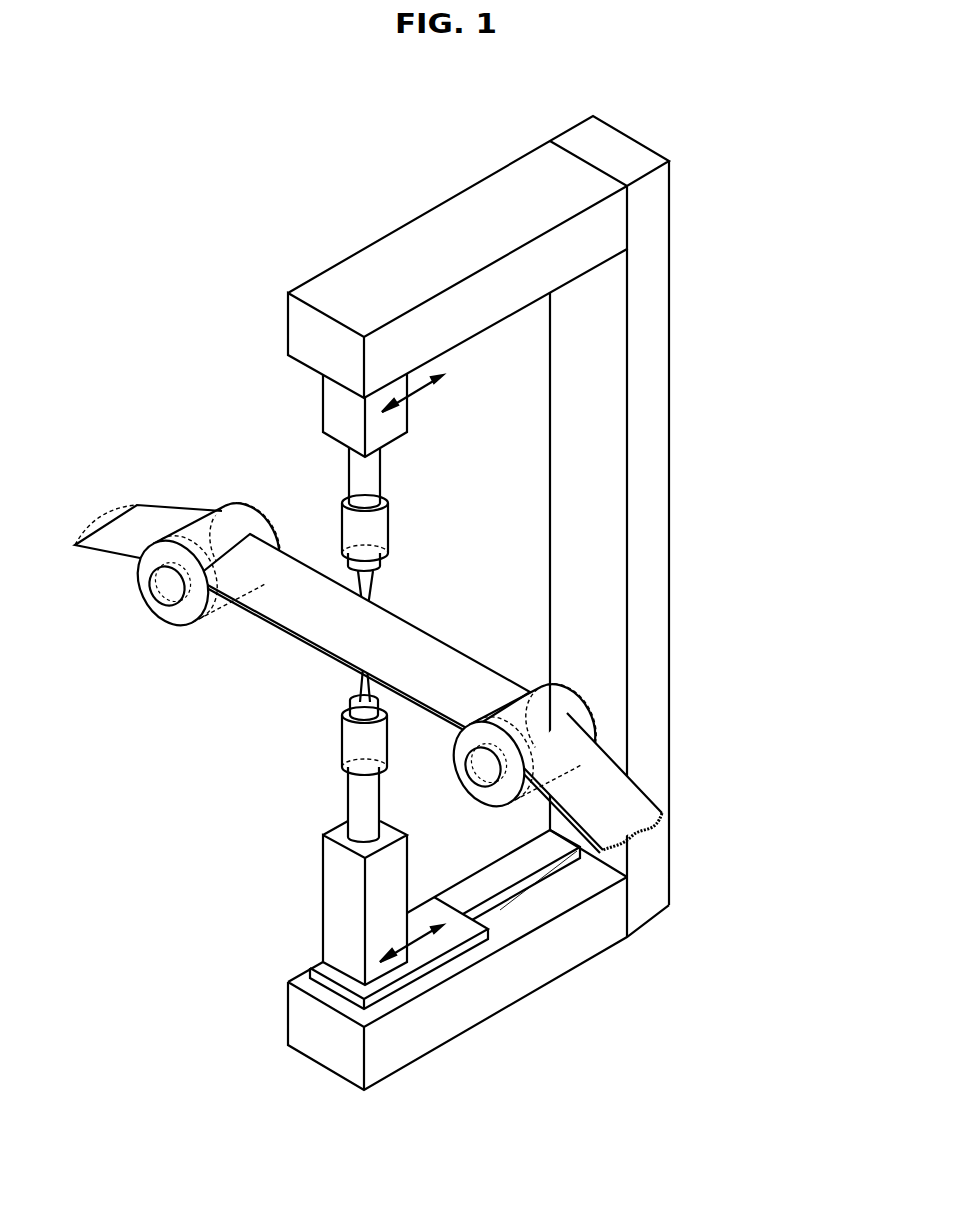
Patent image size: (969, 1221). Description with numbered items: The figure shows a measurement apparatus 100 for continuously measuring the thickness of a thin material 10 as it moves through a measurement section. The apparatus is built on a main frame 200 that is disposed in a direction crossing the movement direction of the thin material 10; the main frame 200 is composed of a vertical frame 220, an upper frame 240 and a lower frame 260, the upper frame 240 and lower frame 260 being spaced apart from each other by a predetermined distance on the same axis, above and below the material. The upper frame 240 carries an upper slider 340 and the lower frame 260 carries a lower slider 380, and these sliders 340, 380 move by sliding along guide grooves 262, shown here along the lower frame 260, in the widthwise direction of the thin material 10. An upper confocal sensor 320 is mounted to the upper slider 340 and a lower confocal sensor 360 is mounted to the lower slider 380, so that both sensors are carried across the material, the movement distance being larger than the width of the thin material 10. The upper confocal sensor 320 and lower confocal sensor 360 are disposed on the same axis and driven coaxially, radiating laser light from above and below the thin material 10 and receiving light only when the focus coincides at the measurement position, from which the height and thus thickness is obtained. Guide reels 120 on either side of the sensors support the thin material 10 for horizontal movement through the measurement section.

The measurement apparatus 100 is at (295, 270).
The thin material 10 is at (414, 636).
The guide reels 120 is at (163, 587).
The main frame 200 is at (770, 515).
The vertical frame 220 is at (655, 578).
The upper frame 240 is at (614, 214).
The lower frame 260 is at (615, 908).
The guide grooves 262 is at (500, 905).
The upper confocal sensor 320 is at (384, 535).
The upper slider 340 is at (398, 425).
The lower confocal sensor 360 is at (347, 750).
The lower slider 380 is at (332, 912).